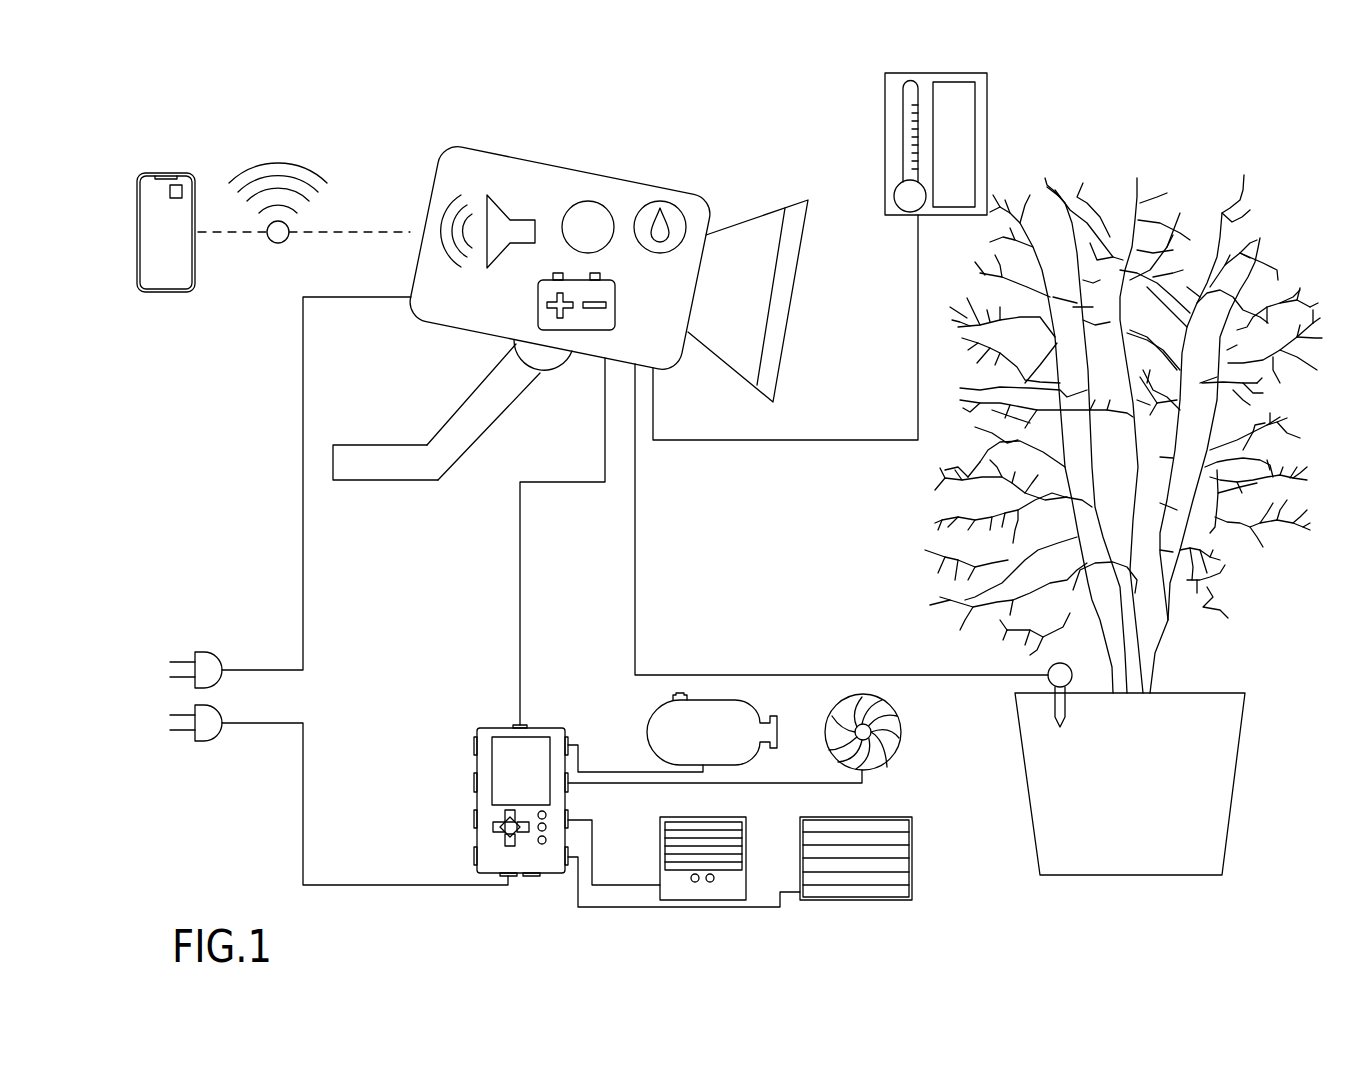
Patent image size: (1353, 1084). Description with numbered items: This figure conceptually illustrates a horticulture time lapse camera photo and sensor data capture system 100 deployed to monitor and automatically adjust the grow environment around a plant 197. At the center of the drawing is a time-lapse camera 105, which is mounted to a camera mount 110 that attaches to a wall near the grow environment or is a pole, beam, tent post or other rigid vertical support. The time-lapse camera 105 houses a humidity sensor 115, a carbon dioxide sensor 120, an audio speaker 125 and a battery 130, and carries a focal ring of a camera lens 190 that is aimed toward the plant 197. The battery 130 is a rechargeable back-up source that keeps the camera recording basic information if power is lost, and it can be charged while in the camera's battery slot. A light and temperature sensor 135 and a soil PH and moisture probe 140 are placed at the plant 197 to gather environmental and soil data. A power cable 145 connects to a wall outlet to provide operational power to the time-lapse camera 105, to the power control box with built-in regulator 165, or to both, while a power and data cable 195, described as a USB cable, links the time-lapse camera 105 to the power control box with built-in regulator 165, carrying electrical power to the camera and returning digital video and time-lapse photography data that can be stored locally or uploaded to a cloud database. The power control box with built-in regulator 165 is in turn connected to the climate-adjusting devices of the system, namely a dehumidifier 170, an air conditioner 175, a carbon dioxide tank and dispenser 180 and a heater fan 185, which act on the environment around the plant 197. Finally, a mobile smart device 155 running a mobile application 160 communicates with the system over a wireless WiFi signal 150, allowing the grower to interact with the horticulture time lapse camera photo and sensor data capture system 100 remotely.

The horticulture time lapse camera photo and sensor data capture system 100 is at (222, 96).
The time-lapse camera 105 is at (652, 255).
The camera mount 110 is at (450, 432).
The humidity sensor 115 is at (672, 212).
The carbon dioxide (CO2) sensor 120 is at (597, 210).
The audio speaker 125 is at (495, 210).
The battery 130 is at (540, 303).
The light and temperature sensor 135 is at (980, 123).
The soil PH and moisture probe 140 is at (1063, 703).
The power cable 145 is at (303, 500).
The wireless (WiFi) signal 150 is at (323, 178).
The mobile smart device 155 is at (153, 175).
The mobile application 160 is at (182, 193).
The power control box with built-in regulator 165 is at (490, 775).
The dehumidifier 170 is at (660, 867).
The air conditioner 175 is at (905, 877).
The CO2 tank and dispenser 180 is at (657, 732).
The heater fan 185 is at (885, 752).
The focal ring of a camera lens 190 is at (778, 313).
The power and data cable 195 is at (520, 593).
The plant 197 is at (1244, 176).